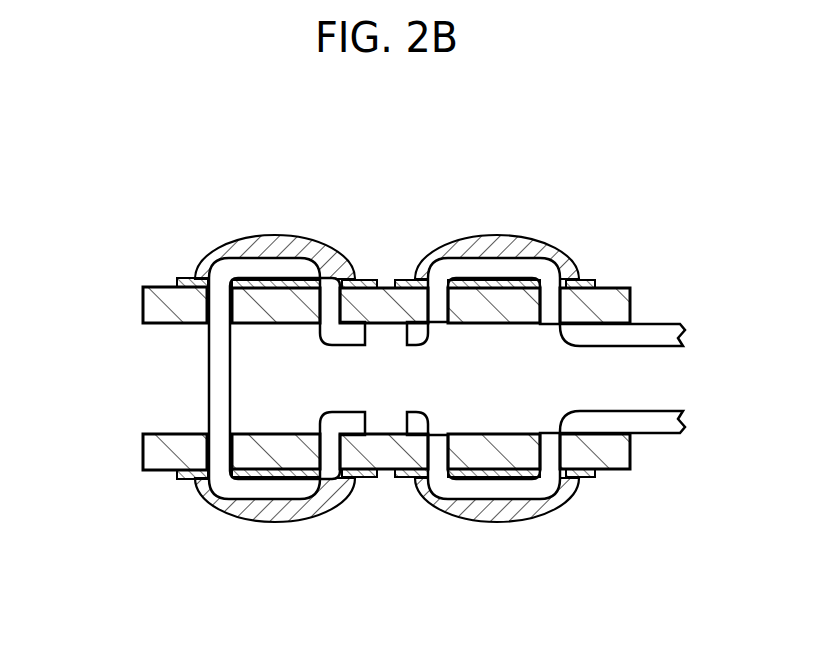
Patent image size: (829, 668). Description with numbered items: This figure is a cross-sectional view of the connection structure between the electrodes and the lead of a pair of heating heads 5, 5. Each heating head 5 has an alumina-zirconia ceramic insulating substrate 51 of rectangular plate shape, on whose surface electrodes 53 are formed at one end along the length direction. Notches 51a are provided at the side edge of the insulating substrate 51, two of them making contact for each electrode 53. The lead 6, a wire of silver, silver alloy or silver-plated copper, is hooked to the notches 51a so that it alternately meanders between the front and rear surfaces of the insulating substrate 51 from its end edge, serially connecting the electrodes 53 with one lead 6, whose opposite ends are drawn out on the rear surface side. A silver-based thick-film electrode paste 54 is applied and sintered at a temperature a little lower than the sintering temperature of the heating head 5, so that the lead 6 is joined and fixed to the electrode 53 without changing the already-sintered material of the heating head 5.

The heating head 5 is at (700, 161).
The lead 6 is at (655, 330).
The insulating substrate 51 is at (160, 448).
The notch 51a is at (318, 432).
The electrode 53 is at (190, 278).
The thick-film electrode paste 54 is at (299, 245).